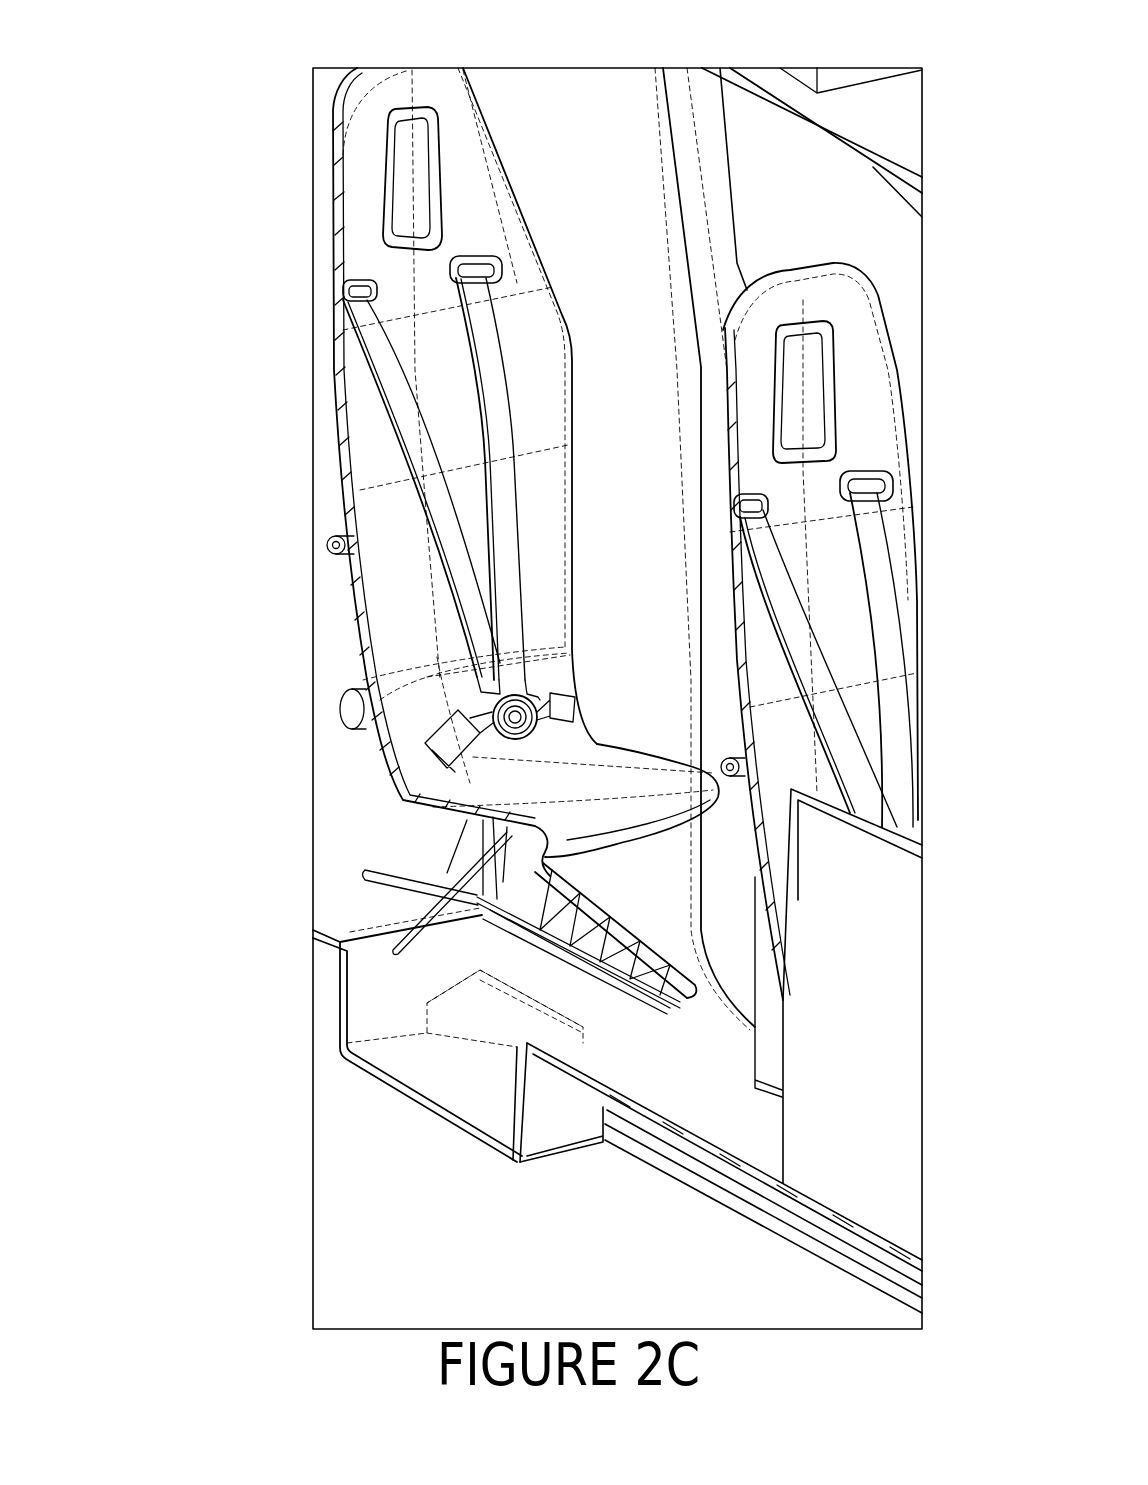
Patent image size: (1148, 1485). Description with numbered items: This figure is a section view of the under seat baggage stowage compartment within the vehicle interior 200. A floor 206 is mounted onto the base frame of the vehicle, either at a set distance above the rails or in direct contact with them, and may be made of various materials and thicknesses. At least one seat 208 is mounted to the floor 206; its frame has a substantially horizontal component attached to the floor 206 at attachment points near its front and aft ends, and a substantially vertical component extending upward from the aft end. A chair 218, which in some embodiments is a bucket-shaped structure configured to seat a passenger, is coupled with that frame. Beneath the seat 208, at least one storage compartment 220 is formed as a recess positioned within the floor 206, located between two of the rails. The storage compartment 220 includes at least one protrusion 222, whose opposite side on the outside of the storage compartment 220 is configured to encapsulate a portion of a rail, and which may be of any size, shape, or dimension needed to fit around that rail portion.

The vehicle interior 200 is at (193, 61).
The floor 206 is at (762, 1117).
The seat 208 is at (392, 200).
The chair 218 is at (495, 423).
The storage compartment 220 is at (365, 978).
The protrusion 222 is at (542, 1025).